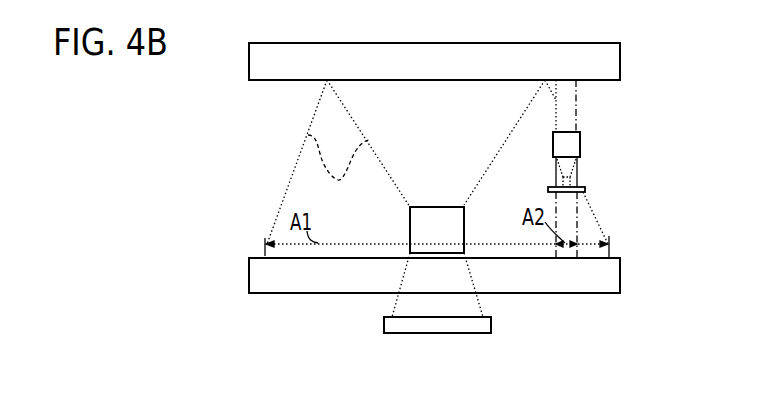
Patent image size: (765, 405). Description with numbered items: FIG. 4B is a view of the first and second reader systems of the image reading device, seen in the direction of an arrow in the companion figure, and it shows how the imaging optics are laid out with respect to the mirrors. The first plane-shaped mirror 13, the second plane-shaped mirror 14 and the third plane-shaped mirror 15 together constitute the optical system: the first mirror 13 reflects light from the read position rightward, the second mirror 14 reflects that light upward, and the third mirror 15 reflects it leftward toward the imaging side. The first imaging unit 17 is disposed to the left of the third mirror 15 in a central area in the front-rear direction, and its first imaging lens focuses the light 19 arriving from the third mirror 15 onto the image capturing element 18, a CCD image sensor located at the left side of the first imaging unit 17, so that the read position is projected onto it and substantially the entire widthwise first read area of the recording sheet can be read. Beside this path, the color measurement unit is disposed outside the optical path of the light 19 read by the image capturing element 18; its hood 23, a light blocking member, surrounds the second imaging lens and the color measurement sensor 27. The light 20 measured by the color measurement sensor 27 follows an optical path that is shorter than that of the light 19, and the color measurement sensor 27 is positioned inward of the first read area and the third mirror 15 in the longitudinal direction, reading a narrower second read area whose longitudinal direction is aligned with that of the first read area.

The first plane-shaped mirror 13 is at (585, 293).
The second plane-shaped mirror 14 is at (449, 42).
The third plane-shaped mirror 15 is at (580, 53).
The first imaging unit 17 is at (436, 207).
The image capturing element 18 is at (440, 333).
The light 19 is at (632, 207).
The light 20 is at (558, 165).
The hood 23 is at (583, 143).
The color measurement sensor 27 is at (567, 179).